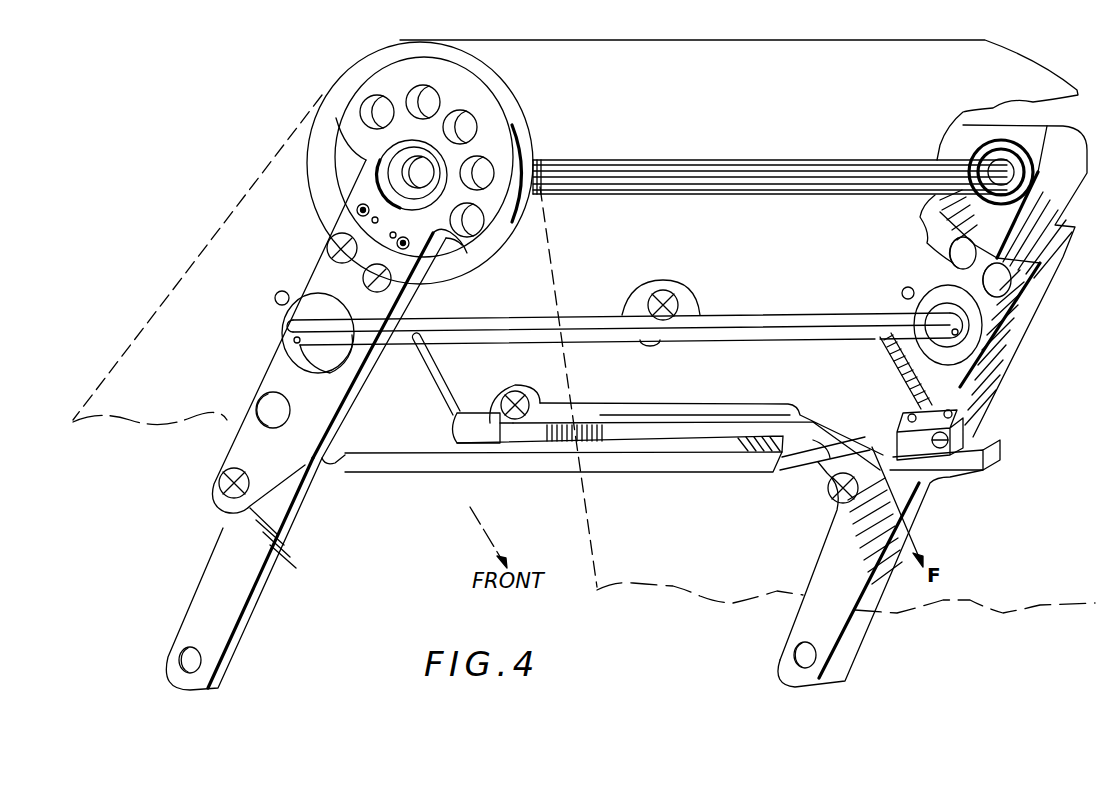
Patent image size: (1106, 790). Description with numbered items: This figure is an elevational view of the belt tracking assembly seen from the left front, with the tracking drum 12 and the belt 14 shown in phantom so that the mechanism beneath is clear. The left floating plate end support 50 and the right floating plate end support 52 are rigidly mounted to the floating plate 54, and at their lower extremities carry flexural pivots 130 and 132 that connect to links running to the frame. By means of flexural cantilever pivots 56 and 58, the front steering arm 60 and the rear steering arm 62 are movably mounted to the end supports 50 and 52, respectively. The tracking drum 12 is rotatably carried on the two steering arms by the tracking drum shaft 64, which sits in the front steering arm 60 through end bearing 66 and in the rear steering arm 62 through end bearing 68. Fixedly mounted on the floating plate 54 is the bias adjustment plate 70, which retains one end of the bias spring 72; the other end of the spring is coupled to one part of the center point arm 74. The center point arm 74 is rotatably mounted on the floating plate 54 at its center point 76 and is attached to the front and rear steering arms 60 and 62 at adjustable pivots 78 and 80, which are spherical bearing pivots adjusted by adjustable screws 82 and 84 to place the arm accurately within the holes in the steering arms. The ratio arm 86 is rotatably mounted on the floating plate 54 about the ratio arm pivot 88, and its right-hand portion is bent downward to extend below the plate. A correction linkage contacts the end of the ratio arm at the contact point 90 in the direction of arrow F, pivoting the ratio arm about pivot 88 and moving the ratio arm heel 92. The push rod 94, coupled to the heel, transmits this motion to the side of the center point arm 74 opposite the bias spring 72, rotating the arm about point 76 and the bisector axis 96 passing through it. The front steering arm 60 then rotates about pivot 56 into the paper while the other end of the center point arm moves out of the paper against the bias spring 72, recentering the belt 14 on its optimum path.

The tracking drum 12 is at (320, 212).
The belt 14 is at (244, 203).
The left floating plate end support 50 is at (272, 570).
The right floating plate end support 52 is at (874, 603).
The floating plate 54 is at (432, 470).
The flexural cantilever pivot 56 is at (220, 487).
The flexural cantilever pivot 58 is at (828, 488).
The front steering arm 60 is at (226, 433).
The rear steering arm 62 is at (1012, 334).
The tracking drum shaft 64 is at (650, 162).
The end bearing 66 is at (412, 175).
The end bearing 68 is at (1020, 172).
The bias adjustment plate 70 is at (898, 432).
The bias spring 72 is at (885, 366).
The center point arm 74 is at (764, 313).
The center point 76 is at (655, 343).
The adjustable pivot 78 is at (292, 352).
The adjustable pivot 80 is at (953, 292).
The adjustable screw 82 is at (280, 292).
The adjustable screw 84 is at (905, 288).
The ratio arm 86 is at (720, 408).
The ratio arm pivot 88 is at (490, 448).
The contact point 90 is at (833, 445).
The ratio arm heel 92 is at (455, 418).
The push rod 94 is at (440, 350).
The bisector axis 96 is at (688, 290).
The flexural pivot 130 is at (195, 650).
The flexural pivot 132 is at (806, 647).